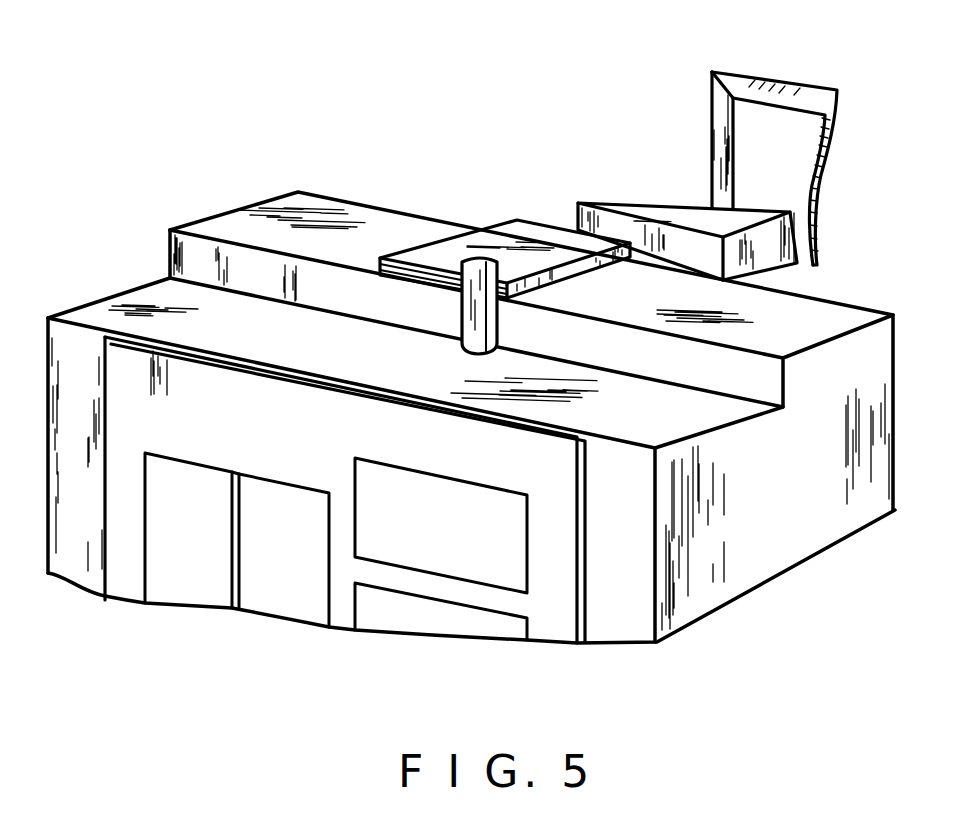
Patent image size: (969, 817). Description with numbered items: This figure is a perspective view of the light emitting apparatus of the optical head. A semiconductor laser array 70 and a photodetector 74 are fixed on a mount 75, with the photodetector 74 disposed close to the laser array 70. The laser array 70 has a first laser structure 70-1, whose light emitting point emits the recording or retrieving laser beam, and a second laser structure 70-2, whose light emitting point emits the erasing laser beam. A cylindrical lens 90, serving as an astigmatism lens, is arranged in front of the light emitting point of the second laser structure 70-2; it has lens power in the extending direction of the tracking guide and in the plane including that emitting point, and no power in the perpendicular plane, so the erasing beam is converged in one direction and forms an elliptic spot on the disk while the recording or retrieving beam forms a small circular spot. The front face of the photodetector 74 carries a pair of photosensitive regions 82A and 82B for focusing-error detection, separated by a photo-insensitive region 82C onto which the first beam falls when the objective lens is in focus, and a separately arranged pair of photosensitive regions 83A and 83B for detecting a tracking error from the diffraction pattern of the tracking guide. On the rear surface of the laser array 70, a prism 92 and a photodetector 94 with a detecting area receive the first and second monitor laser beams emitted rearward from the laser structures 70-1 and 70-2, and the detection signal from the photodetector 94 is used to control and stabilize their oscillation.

The semiconductor laser array 70 is at (547, 238).
The first laser structure 70-1 is at (408, 270).
The second laser structure 70-2 is at (485, 280).
The photodetector 74 is at (585, 521).
The mount 75 is at (778, 557).
The photosensitive region 82A is at (165, 473).
The photosensitive region 82B is at (285, 507).
The photo-insensitive region 82C is at (240, 507).
The photosensitive region 83A is at (453, 618).
The photosensitive region 83B is at (447, 498).
The cylindrical lens 90 is at (468, 317).
The prism 92 is at (667, 217).
The photodetector 94 is at (761, 136).